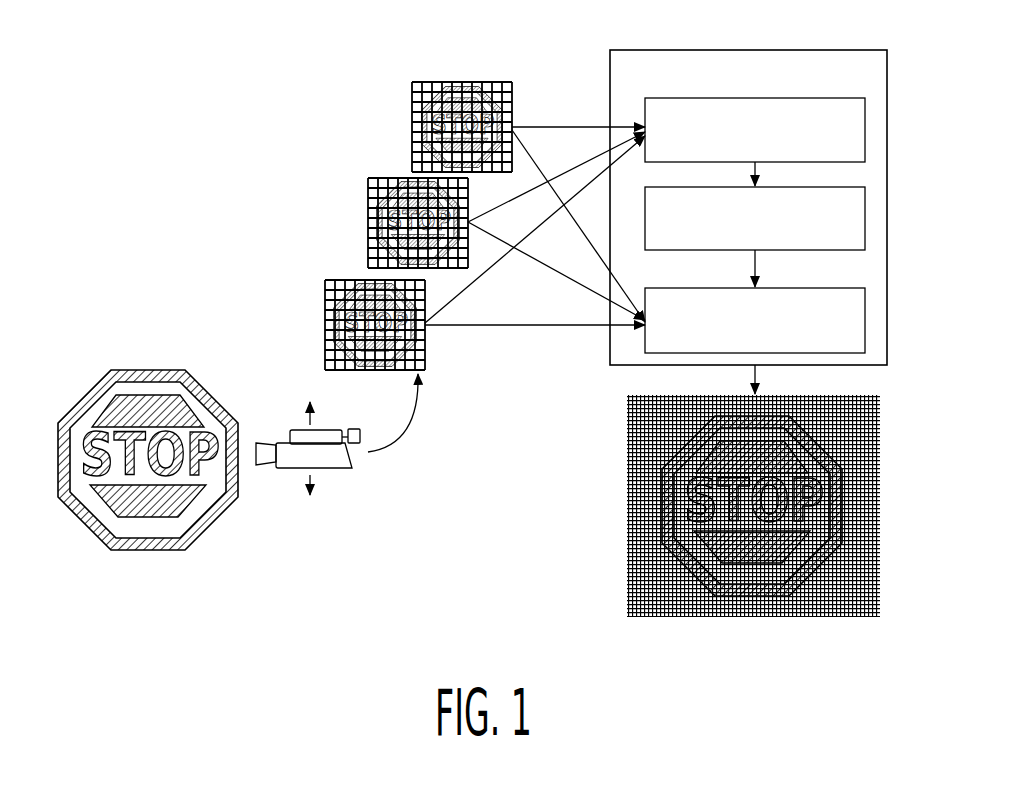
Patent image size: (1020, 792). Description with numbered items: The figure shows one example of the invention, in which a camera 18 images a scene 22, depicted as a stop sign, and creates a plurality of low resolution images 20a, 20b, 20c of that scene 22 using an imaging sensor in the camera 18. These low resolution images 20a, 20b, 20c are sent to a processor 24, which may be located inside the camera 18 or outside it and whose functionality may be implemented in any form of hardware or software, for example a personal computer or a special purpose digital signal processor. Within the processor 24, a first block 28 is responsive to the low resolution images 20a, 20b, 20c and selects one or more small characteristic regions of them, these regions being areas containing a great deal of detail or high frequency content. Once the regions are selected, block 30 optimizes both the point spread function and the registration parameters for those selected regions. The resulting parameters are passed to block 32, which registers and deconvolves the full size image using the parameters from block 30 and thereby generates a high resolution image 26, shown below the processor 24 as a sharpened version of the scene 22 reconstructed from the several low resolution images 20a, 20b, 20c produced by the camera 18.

The camera 18 is at (328, 424).
The low resolution image 20a is at (325, 306).
The low resolution image 20b is at (368, 206).
The low resolution image 20c is at (412, 112).
The scene 22 is at (155, 372).
The processor 24 is at (771, 187).
The high resolution image 26 is at (855, 393).
The block 28 is at (866, 128).
The block 30 is at (866, 205).
The block 32 is at (866, 325).